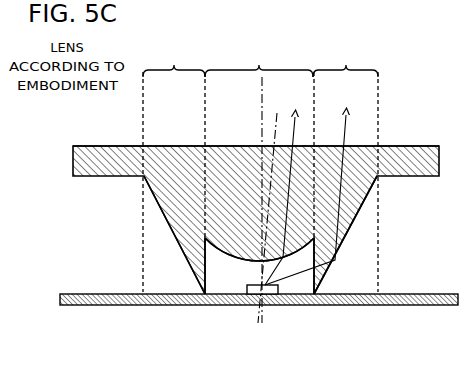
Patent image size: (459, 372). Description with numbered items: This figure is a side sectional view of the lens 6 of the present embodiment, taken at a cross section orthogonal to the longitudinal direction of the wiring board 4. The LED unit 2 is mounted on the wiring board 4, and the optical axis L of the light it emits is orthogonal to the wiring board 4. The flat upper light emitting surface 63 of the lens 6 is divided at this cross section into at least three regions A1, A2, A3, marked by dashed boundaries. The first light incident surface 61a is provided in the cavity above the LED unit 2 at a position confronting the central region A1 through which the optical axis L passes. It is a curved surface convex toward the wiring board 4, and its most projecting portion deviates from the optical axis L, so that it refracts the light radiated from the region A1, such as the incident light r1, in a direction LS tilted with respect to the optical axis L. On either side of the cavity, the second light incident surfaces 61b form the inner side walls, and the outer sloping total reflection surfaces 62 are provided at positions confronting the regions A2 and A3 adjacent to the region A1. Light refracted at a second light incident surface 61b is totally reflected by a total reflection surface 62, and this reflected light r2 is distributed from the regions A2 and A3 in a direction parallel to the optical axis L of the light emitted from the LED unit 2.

The lens 6 is at (79, 142).
The light emitting surface 63 is at (183, 146).
The total reflection surfaces 62 is at (165, 218).
The first light incident surface 61a is at (230, 250).
The second light incident surface 61b is at (203, 258).
The LED unit 2 is at (267, 292).
The wiring board 4 is at (318, 296).
The region A1 is at (259, 59).
The region A2 is at (174, 167).
The region A3 is at (345, 167).
The optical axis L is at (262, 200).
The direction LS is at (272, 214).
The incident light r1 is at (288, 191).
The reflected light r2 is at (308, 191).